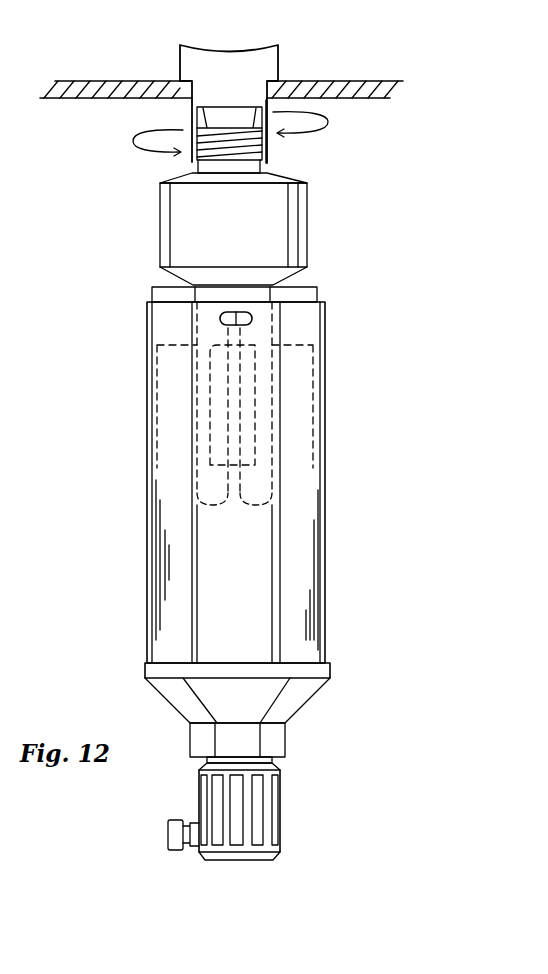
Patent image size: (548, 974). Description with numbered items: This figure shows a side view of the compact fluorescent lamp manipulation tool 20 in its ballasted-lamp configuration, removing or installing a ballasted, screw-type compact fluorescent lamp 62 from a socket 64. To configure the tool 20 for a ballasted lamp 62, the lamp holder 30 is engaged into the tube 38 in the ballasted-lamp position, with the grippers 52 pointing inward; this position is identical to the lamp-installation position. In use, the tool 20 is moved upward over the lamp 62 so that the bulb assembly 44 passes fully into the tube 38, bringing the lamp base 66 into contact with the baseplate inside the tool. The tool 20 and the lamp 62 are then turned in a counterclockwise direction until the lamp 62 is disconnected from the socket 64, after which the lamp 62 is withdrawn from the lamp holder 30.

The tool 20 is at (222, 581).
The lamp holder 30 is at (331, 295).
The tube 38 is at (168, 627).
The bulb assembly 44 is at (205, 493).
The grippers 52 is at (153, 427).
The ballasted compact fluorescent lamp 62 is at (225, 196).
The socket 64 is at (193, 68).
The lamp base 66 is at (170, 225).